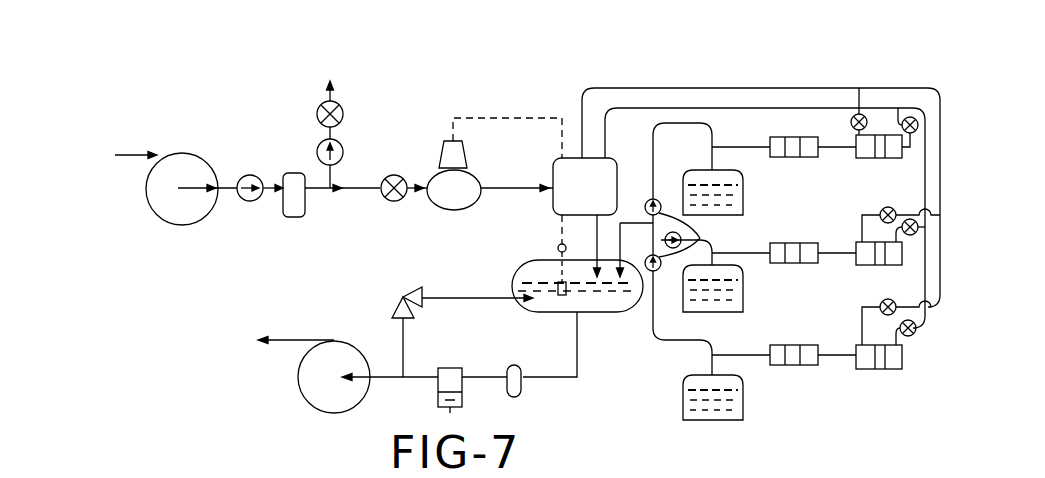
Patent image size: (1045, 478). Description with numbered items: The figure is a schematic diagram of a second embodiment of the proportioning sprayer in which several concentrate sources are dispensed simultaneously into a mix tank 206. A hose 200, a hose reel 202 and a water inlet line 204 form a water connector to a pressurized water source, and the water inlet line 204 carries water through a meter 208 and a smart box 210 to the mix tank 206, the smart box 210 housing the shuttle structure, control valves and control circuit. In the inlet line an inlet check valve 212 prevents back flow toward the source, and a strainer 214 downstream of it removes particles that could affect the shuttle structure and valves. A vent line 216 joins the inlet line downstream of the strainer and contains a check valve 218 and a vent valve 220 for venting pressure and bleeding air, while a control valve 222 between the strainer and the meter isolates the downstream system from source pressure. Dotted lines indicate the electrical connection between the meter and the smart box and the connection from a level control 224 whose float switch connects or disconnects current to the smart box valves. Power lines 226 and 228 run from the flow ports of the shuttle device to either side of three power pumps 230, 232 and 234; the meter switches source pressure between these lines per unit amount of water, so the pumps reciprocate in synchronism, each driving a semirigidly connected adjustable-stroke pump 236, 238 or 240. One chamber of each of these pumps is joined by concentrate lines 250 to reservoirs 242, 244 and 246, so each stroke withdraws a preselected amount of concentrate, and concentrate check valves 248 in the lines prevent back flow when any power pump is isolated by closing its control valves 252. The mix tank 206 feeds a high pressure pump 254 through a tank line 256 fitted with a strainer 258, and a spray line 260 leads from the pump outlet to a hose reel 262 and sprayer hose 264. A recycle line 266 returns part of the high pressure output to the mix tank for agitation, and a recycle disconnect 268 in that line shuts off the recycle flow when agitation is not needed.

The hose 200 is at (135, 126).
The hose reel 202 is at (176, 166).
The water inlet line 204 is at (221, 190).
The mix tank 206 is at (512, 283).
The meter 208 is at (450, 205).
The smart box 210 is at (556, 170).
The inlet check valve 212 is at (244, 176).
The strainer 214 is at (292, 218).
The vent line 216 is at (332, 172).
The check valve 218 is at (341, 140).
The vent valve 220 is at (318, 113).
The control valve 222 is at (394, 175).
The level control 224 is at (558, 248).
The power line 226 is at (644, 88).
The power line 228 is at (728, 108).
The pump 230 is at (859, 158).
The pump 232 is at (860, 265).
The pump 234 is at (860, 371).
The pump 236 is at (778, 158).
The pump 238 is at (775, 264).
The pump 240 is at (778, 368).
The reservoir 242 is at (743, 203).
The reservoir 244 is at (743, 303).
The reservoir 246 is at (745, 412).
The concentrate check valves 248 is at (700, 238).
The concentrate lines 250 is at (653, 170).
The control valves 252 is at (859, 112).
The high pressure pump 254 is at (452, 368).
The tank line 256 is at (577, 333).
The strainer 258 is at (520, 392).
The spray line 260 is at (372, 378).
The hose reel 262 is at (312, 400).
The sprayer hose 264 is at (280, 339).
The recycle line 266 is at (405, 332).
The recycle disconnect 268 is at (403, 300).